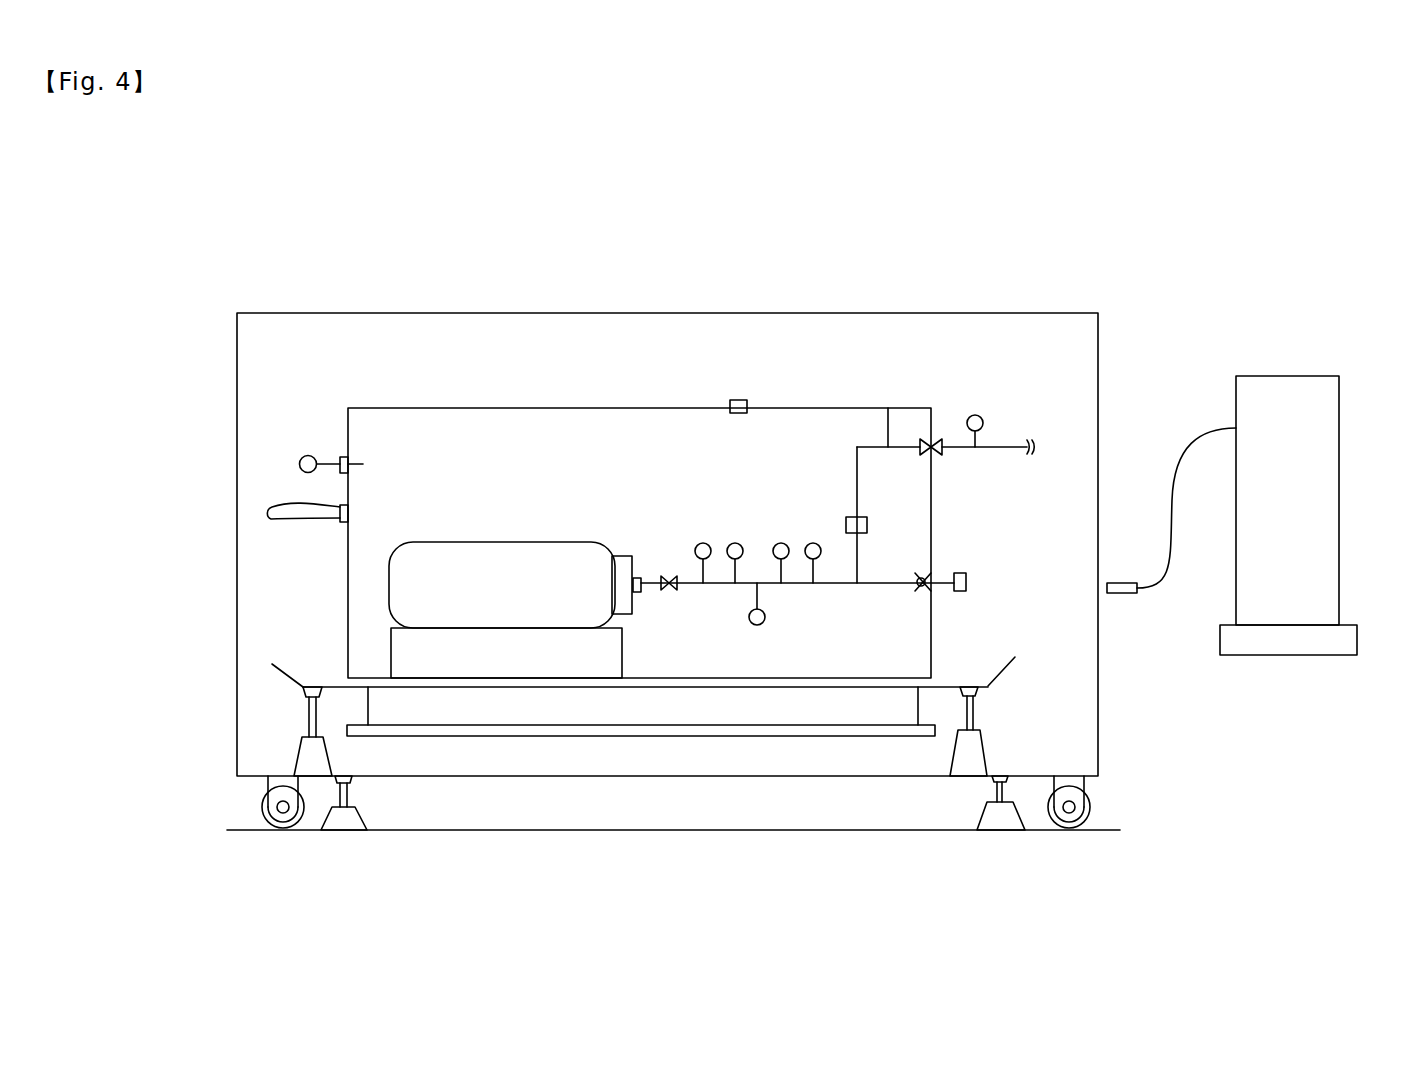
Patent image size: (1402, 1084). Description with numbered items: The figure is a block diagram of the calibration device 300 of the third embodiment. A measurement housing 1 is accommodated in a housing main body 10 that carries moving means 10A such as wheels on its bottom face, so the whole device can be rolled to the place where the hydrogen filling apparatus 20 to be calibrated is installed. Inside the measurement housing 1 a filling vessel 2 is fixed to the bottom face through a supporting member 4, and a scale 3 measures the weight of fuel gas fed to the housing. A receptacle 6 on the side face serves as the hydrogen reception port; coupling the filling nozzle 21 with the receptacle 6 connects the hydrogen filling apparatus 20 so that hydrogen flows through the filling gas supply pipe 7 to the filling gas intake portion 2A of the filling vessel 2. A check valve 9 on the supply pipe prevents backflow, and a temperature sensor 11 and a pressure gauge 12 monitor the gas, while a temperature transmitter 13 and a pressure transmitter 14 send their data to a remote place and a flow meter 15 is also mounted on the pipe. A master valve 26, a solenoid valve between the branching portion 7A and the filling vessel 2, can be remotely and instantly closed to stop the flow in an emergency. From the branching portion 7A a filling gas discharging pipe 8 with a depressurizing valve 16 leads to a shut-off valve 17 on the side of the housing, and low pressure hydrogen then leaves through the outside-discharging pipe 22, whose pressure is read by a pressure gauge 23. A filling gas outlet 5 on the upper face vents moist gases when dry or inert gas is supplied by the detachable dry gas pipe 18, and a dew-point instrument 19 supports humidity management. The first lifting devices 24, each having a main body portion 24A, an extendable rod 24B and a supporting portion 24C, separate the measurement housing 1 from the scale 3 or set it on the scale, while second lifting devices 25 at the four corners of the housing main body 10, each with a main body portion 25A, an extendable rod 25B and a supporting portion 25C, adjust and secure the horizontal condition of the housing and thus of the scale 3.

The calibration device 300 is at (971, 286).
The measurement housing 1 is at (397, 408).
The housing main body 10 is at (462, 313).
The moving means 10A is at (1092, 806).
The filling gas outlet 5 is at (739, 400).
The filling gas discharging pipe 8 is at (888, 408).
The dew-point instrument 19 is at (306, 455).
The dry gas pipe 18 is at (306, 518).
The filling vessel 2 is at (447, 542).
The filling gas intake portion 2A is at (629, 556).
The supporting member 4 is at (540, 657).
The scale 3 is at (475, 707).
The filling gas supply pipe 7 is at (837, 583).
The branching portion 7A is at (859, 590).
The master valve 26 is at (669, 591).
The pressure gauge 12 is at (703, 543).
The temperature sensor 11 is at (735, 543).
The pressure transmitter 14 is at (781, 543).
The temperature transmitter 13 is at (813, 543).
The flow meter 15 is at (757, 625).
The depressurizing valve 16 is at (867, 525).
The shut-off valve 17 is at (933, 440).
The pressure gauge 23 is at (976, 415).
The outside-discharging pipe 22 is at (1005, 447).
The check valve 9 is at (930, 570).
The receptacle 6 is at (960, 591).
The first lifting device 24 is at (994, 734).
The main body portion 24A is at (299, 757).
The extendable rod 24B is at (307, 738).
The supporting portion 24C is at (304, 695).
The second lifting device 25 is at (993, 836).
The main body portion 25A is at (343, 826).
The extendable rod 25B is at (350, 796).
The supporting portion 25C is at (352, 783).
The filling nozzle 21 is at (1122, 593).
The hydrogen filling apparatus 20 is at (1263, 376).